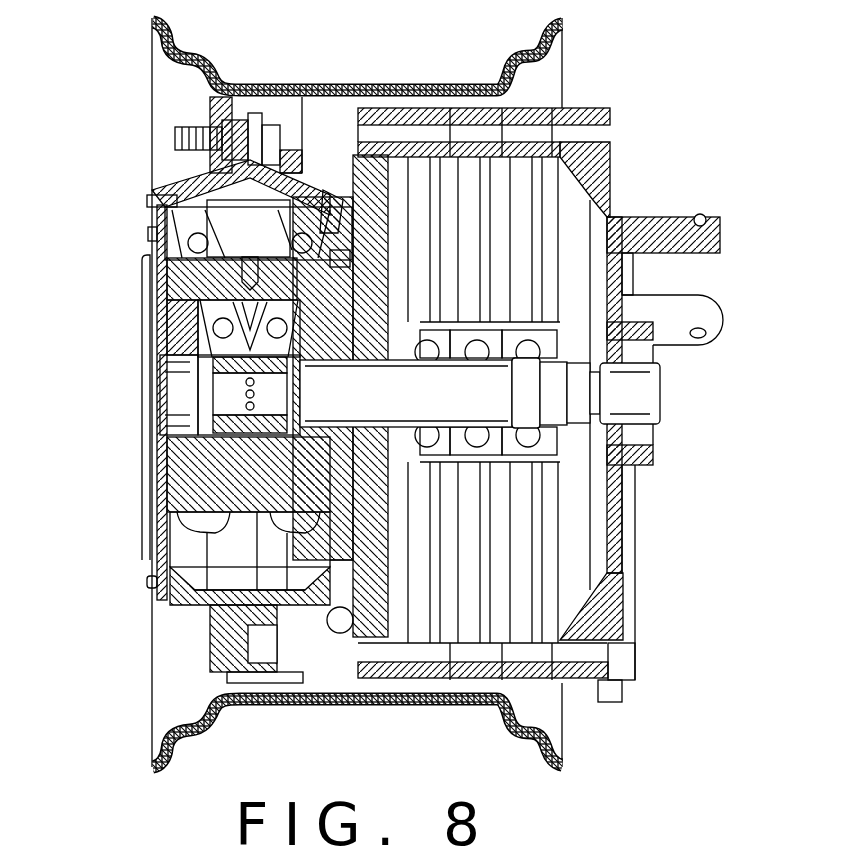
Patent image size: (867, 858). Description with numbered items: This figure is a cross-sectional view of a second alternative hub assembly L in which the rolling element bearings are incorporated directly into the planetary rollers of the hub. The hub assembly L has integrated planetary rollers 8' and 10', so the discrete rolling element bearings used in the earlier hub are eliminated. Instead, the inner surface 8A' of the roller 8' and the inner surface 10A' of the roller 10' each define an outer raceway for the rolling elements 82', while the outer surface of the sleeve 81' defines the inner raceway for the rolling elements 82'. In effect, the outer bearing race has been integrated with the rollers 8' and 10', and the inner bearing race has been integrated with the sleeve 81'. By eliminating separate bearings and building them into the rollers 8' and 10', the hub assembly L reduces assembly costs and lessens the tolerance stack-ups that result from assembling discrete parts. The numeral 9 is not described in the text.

The inner surface 10A' is at (252, 153).
The motor housing 9 is at (330, 300).
The inner surface 8A' is at (117, 190).
The rolling elements 82' is at (98, 224).
The sleeve 81' is at (97, 402).
The planetary roller 8' is at (171, 367).
The planetary roller 10' is at (480, 386).
The hub assembly L is at (128, 583).